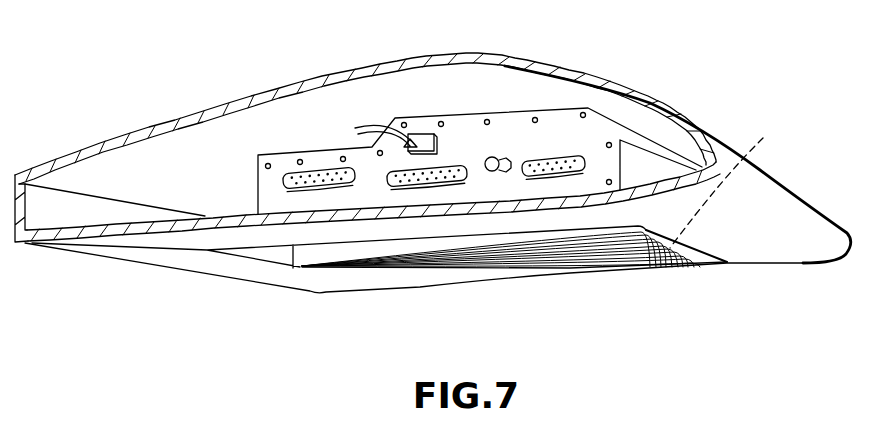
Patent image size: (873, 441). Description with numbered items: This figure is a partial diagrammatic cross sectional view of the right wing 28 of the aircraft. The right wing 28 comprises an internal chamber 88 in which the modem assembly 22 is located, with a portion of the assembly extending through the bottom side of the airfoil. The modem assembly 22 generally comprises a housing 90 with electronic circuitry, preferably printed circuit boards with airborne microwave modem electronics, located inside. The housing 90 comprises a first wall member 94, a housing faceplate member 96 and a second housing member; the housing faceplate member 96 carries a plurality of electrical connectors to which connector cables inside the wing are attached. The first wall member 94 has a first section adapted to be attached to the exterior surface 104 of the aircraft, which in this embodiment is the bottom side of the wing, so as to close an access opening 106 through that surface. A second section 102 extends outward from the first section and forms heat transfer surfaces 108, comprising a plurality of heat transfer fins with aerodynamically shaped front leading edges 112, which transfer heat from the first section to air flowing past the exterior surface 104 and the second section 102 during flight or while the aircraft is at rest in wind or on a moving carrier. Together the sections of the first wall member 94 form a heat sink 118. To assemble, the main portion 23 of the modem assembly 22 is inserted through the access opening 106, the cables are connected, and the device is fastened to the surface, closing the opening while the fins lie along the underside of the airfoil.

The modem assembly 22 is at (560, 118).
The main portion 23 is at (462, 123).
The right wing 28 is at (277, 86).
The internal chamber 88 is at (208, 135).
The housing 90 is at (588, 107).
The first wall member 94 is at (398, 266).
The housing faceplate member 96 is at (508, 135).
The second section 102 is at (513, 263).
The exterior surface 104 is at (230, 267).
The access opening 106 is at (678, 164).
The heat transfer surfaces 108 is at (598, 258).
The front leading edges 112 is at (686, 262).
The heat sink 118 is at (625, 240).